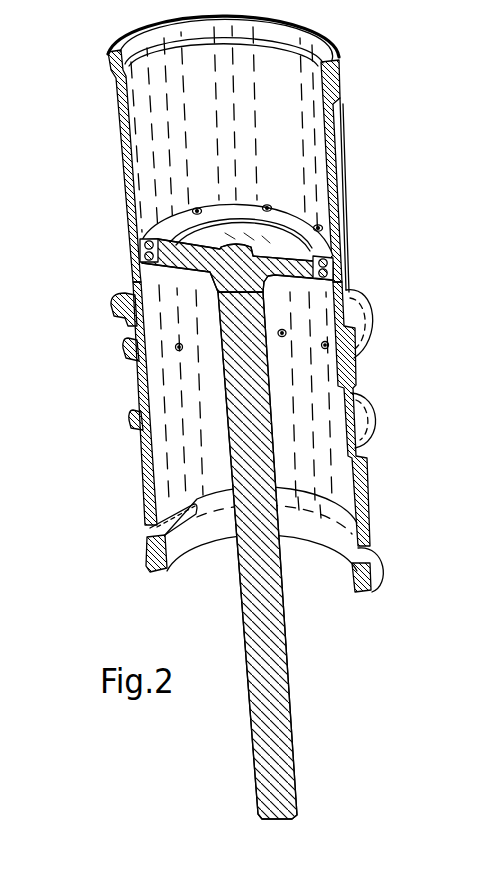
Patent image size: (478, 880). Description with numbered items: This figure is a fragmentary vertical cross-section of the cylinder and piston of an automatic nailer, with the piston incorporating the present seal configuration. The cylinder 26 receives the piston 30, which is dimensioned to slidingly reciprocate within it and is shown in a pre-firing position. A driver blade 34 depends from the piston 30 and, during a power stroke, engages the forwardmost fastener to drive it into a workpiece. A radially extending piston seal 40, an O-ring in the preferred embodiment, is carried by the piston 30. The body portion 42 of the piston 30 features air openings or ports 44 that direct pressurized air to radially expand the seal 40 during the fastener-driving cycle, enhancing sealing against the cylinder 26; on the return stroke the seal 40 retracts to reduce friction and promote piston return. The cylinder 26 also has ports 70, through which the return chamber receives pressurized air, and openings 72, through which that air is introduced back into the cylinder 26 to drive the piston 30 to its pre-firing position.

The cylinder 26 is at (331, 132).
The piston 30 is at (163, 236).
The driver blade 34 is at (260, 620).
The piston seal 40 is at (325, 270).
The body portion 42 is at (270, 233).
The air openings or ports 44 is at (198, 207).
The ports 70 is at (180, 355).
The openings 72 is at (162, 531).